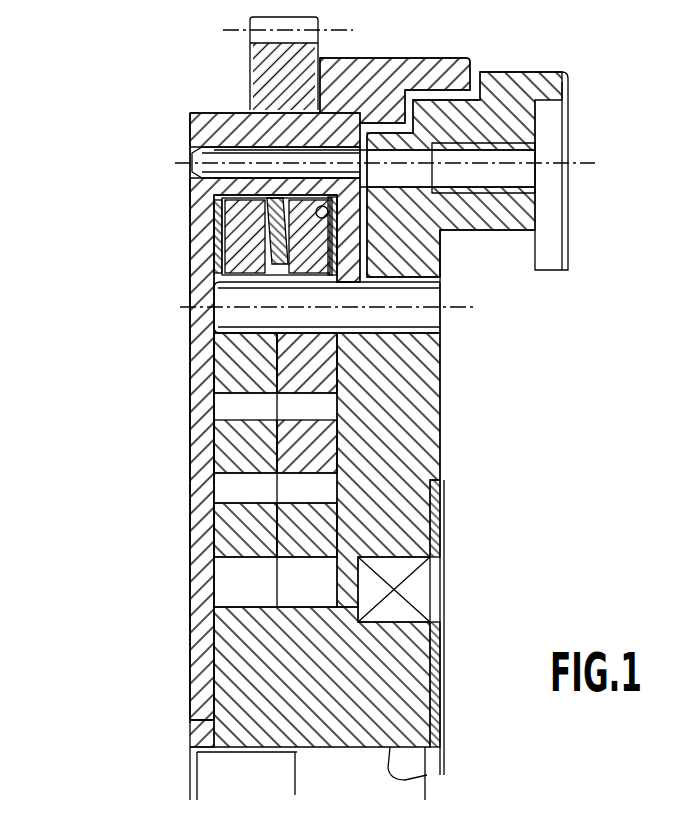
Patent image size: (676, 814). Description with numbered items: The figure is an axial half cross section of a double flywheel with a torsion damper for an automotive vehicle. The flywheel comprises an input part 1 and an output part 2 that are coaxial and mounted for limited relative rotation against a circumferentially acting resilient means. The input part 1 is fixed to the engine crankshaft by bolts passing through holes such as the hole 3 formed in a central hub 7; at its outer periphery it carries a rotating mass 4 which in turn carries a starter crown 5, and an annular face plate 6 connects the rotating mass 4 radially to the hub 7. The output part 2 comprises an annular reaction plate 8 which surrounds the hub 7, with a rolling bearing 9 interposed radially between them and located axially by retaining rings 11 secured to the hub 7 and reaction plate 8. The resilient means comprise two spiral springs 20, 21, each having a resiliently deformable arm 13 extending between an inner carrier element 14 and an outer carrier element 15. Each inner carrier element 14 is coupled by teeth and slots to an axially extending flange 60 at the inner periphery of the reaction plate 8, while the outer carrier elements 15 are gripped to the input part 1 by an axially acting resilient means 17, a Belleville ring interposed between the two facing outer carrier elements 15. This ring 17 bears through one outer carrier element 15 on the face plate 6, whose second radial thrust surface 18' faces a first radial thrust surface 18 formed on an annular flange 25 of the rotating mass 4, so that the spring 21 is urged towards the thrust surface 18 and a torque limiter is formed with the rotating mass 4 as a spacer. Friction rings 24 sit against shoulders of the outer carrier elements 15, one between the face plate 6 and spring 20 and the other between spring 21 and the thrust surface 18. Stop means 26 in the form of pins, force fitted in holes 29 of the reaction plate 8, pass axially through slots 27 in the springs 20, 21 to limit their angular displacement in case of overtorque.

The input part 1 is at (176, 639).
The output part 2 is at (497, 238).
The hole 3 is at (443, 765).
The rotating mass 4 is at (415, 70).
The starter crown 5 is at (250, 72).
The annular face plate 6 is at (197, 692).
The central hub 7 is at (195, 738).
The annular reaction plate 8 is at (397, 448).
The bearing 9 is at (407, 593).
The retaining rings 11 is at (440, 515).
The resiliently deformable arm 13 is at (240, 451).
The inner carrier element 14 is at (285, 525).
The outer carrier element 15 is at (200, 157).
The axially acting resilient means 17 is at (217, 305).
The first radial thrust surface 18 is at (380, 248).
The second radial thrust surface 18' is at (227, 236).
The spiral spring 20 is at (312, 459).
The spiral spring 21 is at (277, 475).
The friction ring 24 is at (192, 210).
The annular flange 25 is at (350, 318).
The stop means 26 is at (400, 345).
The slots 27 is at (240, 352).
The holes 29 is at (440, 428).
The axially extending flange 60 is at (250, 588).